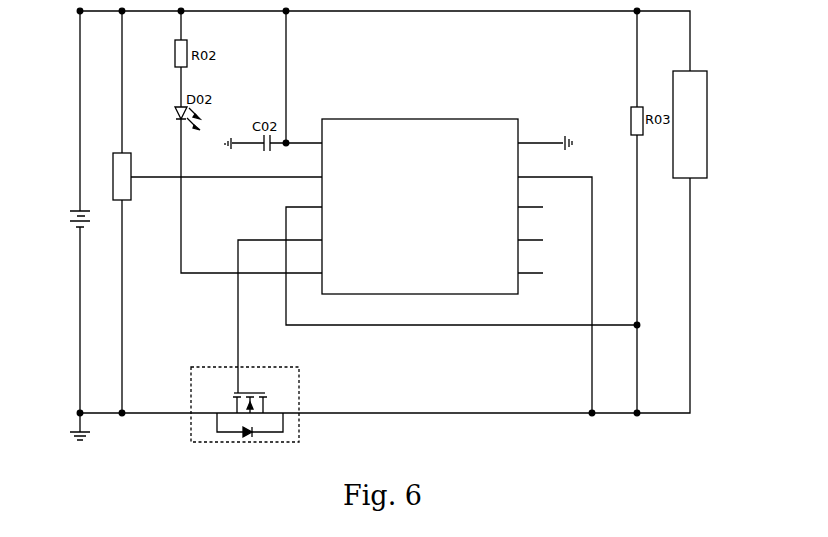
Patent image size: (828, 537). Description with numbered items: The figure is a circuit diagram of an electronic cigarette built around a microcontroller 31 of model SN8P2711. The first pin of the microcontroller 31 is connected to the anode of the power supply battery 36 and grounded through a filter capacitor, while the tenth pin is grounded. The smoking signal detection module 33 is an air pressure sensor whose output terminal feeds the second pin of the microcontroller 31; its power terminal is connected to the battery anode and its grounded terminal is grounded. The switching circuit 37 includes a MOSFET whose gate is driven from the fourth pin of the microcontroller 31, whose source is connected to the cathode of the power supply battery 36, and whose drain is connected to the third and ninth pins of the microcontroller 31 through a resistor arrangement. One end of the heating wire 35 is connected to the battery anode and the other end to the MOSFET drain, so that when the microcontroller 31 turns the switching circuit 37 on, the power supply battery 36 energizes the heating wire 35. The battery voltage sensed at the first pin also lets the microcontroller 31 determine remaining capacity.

The microcontroller 31 is at (425, 196).
The smoking signal detection module 33 is at (131, 154).
The heating wire 35 is at (690, 124).
The power supply battery 36 is at (74, 219).
The switching circuit 37 is at (299, 386).